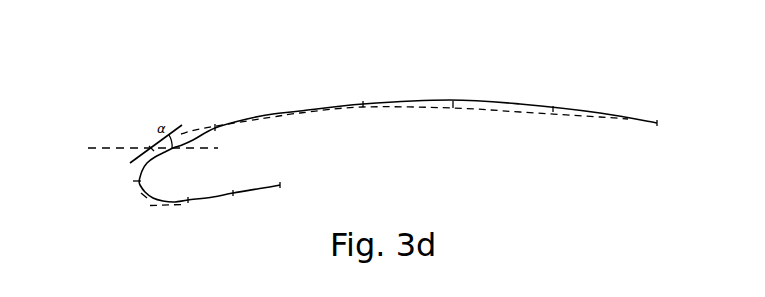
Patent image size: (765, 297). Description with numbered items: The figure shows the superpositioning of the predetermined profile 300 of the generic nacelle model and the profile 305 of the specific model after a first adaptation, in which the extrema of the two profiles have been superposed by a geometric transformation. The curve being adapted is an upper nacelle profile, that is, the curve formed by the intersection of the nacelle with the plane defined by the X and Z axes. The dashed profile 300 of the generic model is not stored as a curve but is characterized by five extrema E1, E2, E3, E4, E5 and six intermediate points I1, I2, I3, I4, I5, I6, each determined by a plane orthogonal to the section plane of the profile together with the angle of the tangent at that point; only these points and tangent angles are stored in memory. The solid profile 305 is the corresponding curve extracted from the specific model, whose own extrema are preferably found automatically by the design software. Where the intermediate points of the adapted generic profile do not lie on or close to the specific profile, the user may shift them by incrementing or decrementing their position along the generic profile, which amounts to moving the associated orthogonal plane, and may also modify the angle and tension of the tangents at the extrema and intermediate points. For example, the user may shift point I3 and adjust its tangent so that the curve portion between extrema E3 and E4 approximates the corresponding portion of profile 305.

The predetermined profile of the generic nacelle model 300 is at (487, 111).
The profile of the specific model 305 is at (480, 101).
The extremum E1 is at (287, 200).
The extremum E2 is at (187, 215).
The extremum E3 is at (126, 187).
The extremum E4 is at (363, 89).
The extremum E5 is at (667, 127).
The intermediate point I1 is at (238, 183).
The intermediate point I2 is at (144, 211).
The intermediate point I3 is at (144, 138).
The intermediate point I4 is at (216, 118).
The intermediate point I5 is at (453, 119).
The intermediate point I6 is at (554, 124).